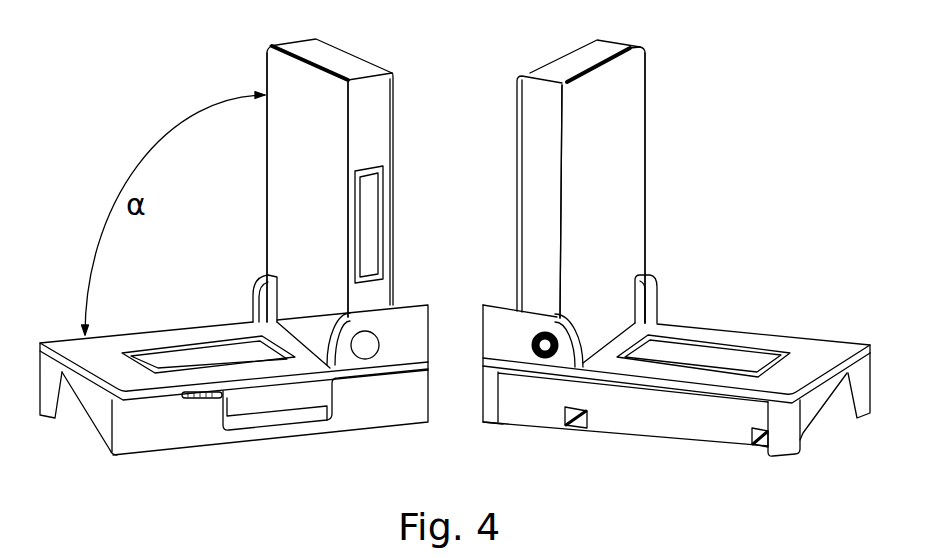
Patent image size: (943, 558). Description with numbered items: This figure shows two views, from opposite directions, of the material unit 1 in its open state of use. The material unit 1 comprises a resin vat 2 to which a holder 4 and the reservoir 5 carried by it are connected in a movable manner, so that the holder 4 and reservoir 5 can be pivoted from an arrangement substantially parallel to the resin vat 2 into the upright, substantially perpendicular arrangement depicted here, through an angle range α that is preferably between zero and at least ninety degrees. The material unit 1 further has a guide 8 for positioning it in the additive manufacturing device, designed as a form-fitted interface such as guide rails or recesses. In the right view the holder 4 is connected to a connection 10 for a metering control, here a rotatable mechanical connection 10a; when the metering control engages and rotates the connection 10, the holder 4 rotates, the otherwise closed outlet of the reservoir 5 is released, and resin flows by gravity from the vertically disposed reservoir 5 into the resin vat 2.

The material unit 1 is at (470, 161).
The resin vat 2 is at (455, 377).
The holder 4 is at (288, 78).
The reservoir 5 is at (328, 63).
The guide 8 is at (502, 402).
The connection 10 is at (661, 301).
The rotatable mechanical connection 10a is at (549, 342).